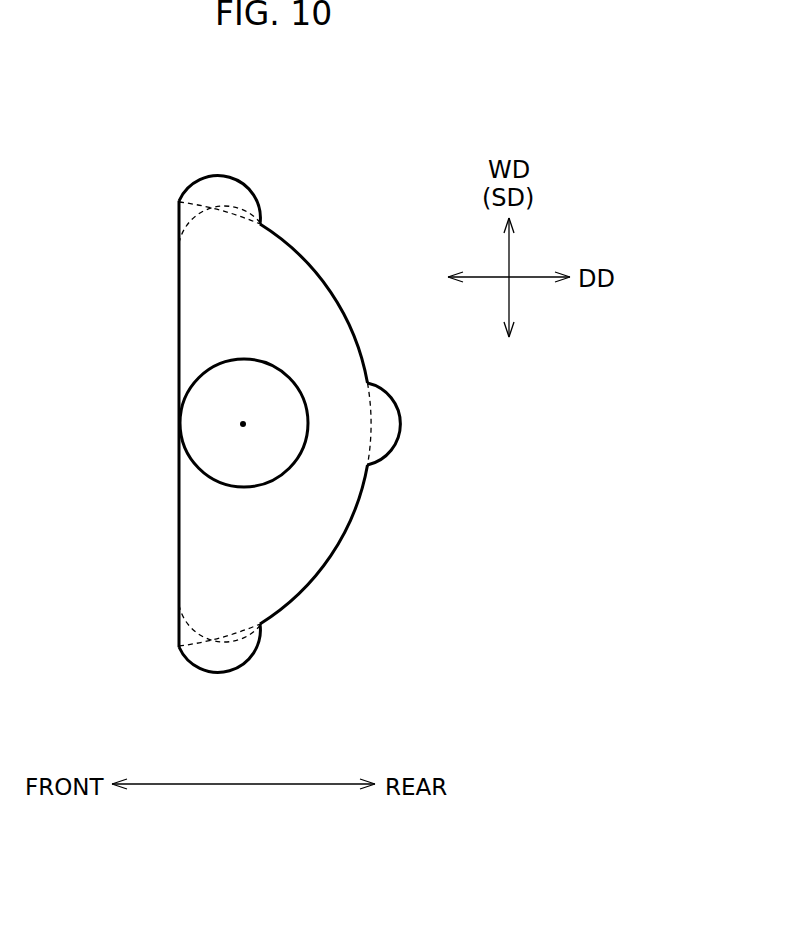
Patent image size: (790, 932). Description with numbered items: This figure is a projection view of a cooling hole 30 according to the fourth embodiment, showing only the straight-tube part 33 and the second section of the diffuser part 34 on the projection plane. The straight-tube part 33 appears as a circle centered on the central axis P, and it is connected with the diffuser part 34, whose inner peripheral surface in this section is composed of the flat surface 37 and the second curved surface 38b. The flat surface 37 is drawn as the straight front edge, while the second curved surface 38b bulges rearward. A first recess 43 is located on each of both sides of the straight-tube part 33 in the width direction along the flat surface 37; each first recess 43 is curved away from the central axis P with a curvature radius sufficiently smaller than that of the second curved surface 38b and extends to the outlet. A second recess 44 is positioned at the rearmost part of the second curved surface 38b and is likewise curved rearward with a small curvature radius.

The cooling hole 30 is at (348, 152).
The straight-tube part 33 is at (195, 380).
The diffuser part 34 is at (297, 424).
The flat surface 37 is at (179, 527).
The second curved surface 38b is at (357, 515).
The first recess 43 is at (210, 177).
The second recess 44 is at (390, 398).